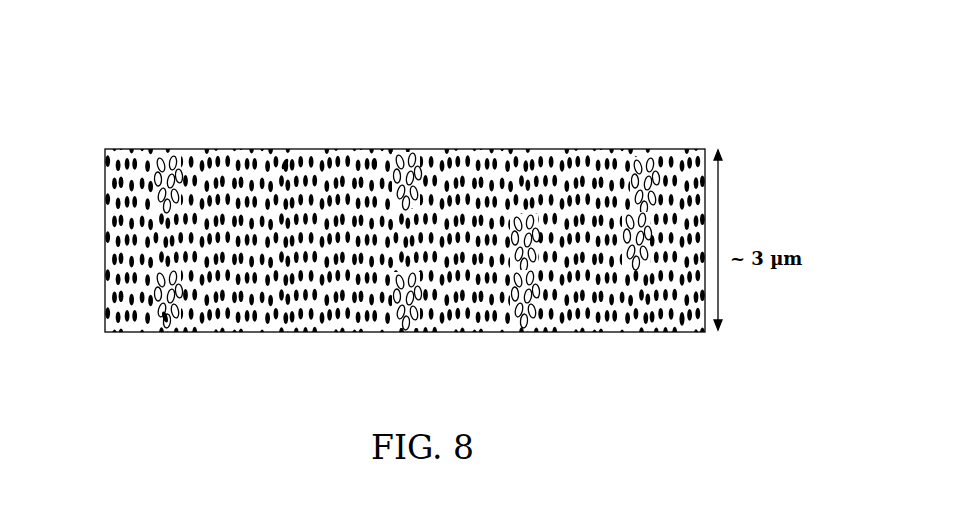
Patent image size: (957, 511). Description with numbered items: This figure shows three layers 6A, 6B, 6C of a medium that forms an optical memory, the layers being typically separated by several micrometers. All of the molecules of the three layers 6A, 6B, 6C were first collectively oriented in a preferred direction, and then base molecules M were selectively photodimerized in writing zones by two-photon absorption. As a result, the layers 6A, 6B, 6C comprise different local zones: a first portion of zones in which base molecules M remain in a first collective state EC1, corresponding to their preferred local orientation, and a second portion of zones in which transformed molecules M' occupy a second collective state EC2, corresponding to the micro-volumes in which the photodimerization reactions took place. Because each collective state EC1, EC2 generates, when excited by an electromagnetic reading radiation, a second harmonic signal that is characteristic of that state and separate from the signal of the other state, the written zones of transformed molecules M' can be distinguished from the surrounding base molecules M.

The layer 6A is at (118, 185).
The layer 6B is at (118, 252).
The layer 6C is at (118, 306).
The base molecules M is at (528, 236).
The transformed molecules M' is at (225, 240).
The first collective state EC1 is at (308, 352).
The second collective state EC2 is at (423, 352).